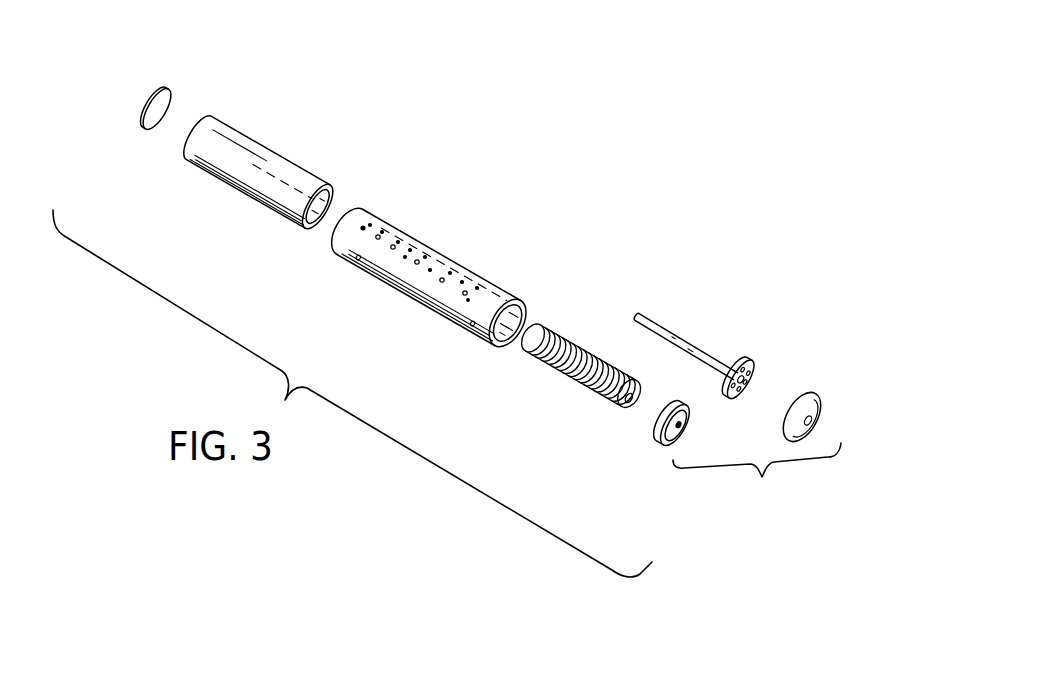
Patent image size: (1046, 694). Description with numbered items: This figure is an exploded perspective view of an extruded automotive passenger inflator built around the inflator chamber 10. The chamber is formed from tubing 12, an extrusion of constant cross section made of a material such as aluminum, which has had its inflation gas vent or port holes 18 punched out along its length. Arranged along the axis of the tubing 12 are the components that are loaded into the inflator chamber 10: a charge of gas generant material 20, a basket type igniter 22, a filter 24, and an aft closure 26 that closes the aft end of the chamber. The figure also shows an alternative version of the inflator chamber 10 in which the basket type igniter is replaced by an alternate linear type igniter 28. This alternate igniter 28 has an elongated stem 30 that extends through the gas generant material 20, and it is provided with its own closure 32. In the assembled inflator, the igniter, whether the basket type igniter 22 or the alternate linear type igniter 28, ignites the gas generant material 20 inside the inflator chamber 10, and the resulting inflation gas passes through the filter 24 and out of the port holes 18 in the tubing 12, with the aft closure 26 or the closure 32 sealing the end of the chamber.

The inflator chamber 10 is at (453, 175).
The tubing 12 is at (505, 298).
The inflation gas vent or port holes 18 is at (435, 267).
The gas generant material 20 is at (567, 368).
The basket type igniter 22 is at (650, 437).
The filter 24 is at (268, 160).
The aft closure 26 is at (163, 102).
The alternate linear type igniter 28 is at (775, 385).
The elongated stem 30 is at (675, 332).
The closure 32 is at (810, 407).